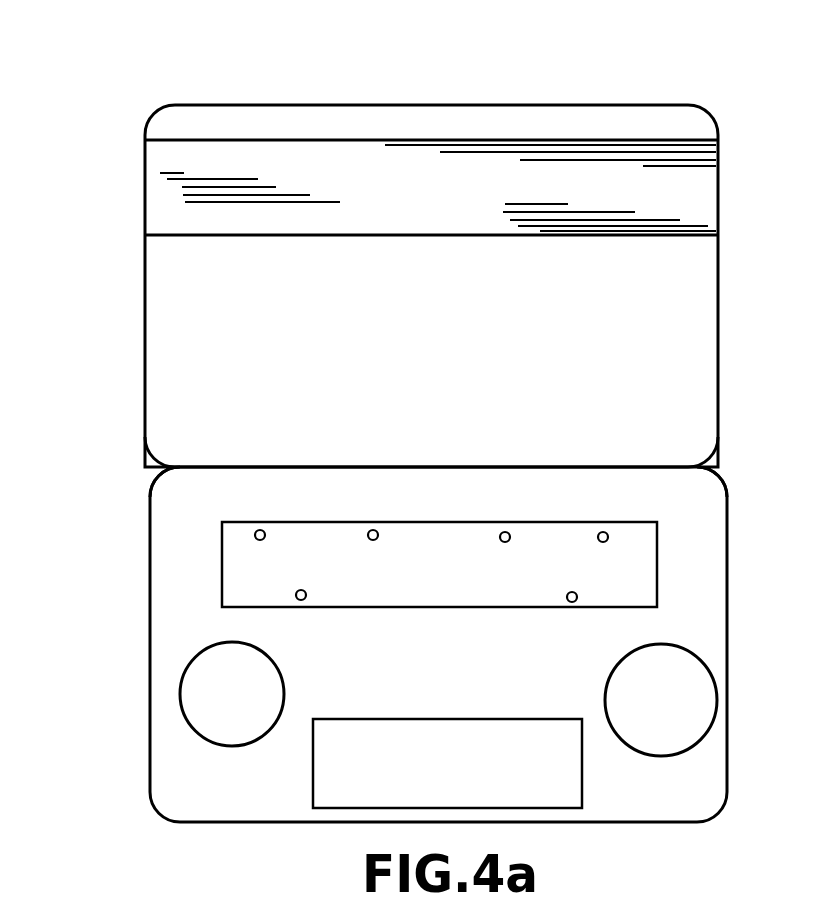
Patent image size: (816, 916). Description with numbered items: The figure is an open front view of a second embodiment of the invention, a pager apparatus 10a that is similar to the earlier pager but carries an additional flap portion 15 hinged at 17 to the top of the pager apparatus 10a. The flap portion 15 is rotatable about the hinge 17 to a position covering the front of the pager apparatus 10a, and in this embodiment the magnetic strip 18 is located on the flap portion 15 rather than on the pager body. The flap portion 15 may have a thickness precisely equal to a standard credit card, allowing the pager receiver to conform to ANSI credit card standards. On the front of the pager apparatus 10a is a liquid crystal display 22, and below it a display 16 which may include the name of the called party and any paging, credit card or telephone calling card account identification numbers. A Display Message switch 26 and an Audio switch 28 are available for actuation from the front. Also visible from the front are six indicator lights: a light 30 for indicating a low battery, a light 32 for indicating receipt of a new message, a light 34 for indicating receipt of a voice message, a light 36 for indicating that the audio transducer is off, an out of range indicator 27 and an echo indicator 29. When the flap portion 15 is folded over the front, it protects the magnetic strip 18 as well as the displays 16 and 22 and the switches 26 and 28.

The pager apparatus 10a is at (147, 633).
The flap portion 15 is at (690, 310).
The display 16 is at (447, 763).
The hinge 17 is at (150, 455).
The magnetic strip 18 is at (305, 130).
The liquid crystal display 22 is at (439, 564).
The Display Message switch 26 is at (720, 684).
The out of range indicator 27 is at (279, 594).
The Audio switch 28 is at (195, 735).
The echo indicator 29 is at (591, 596).
The light 30 is at (280, 539).
The light 32 is at (393, 539).
The light 34 is at (525, 540).
The light 36 is at (623, 540).